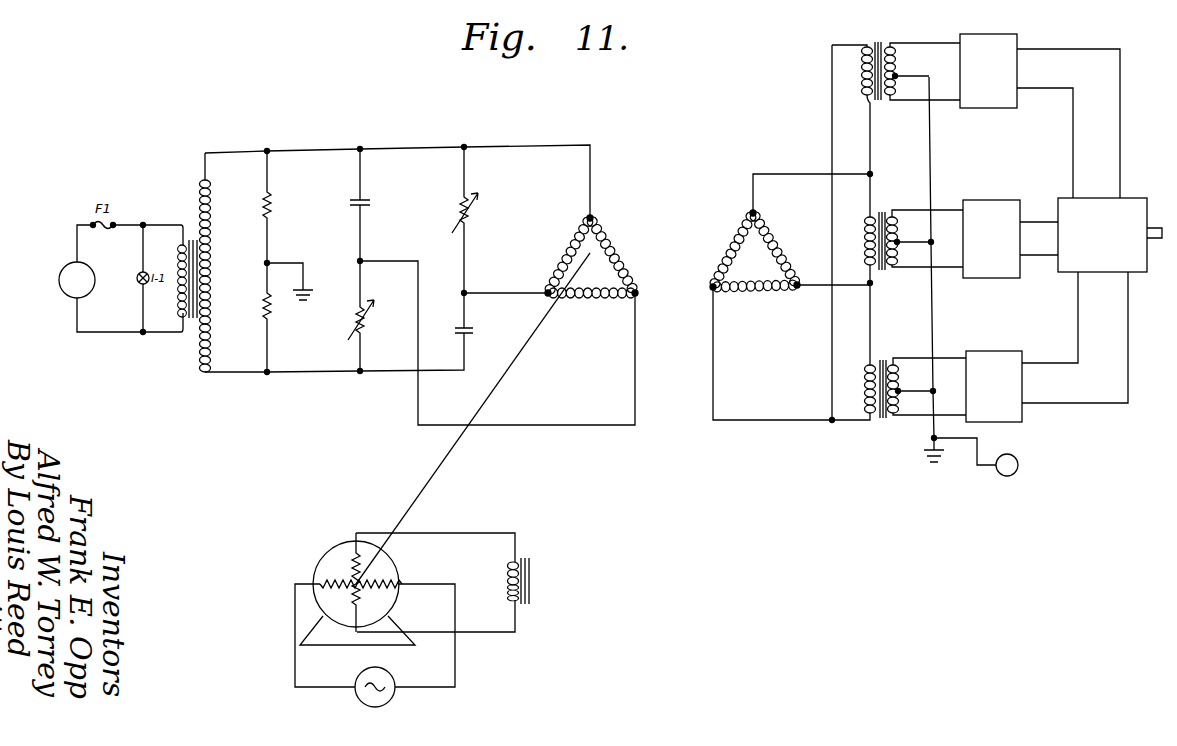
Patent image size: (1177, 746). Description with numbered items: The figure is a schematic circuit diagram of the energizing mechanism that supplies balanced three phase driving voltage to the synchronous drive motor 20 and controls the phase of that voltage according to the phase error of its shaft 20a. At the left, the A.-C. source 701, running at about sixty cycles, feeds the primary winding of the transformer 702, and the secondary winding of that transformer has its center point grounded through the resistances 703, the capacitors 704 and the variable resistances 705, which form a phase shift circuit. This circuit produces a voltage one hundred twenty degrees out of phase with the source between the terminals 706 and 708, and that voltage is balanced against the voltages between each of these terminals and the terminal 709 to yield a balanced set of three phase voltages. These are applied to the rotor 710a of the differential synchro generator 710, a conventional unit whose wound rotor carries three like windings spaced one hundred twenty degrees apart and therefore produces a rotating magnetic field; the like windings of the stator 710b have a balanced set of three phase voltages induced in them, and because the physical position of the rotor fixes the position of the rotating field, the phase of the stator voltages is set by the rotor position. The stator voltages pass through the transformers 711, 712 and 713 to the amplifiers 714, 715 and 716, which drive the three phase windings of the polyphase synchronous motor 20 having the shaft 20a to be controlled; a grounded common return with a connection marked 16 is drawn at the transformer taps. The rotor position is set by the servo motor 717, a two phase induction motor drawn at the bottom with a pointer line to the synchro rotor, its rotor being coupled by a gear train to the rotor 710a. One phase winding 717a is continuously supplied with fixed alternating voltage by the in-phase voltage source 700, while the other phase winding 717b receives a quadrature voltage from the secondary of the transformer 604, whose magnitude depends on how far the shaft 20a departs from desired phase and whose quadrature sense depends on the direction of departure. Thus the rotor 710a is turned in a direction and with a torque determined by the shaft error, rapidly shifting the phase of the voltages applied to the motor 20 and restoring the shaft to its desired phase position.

The A.-C. source 701 is at (80, 278).
The transformer 702 is at (210, 400).
The resistances 703 is at (275, 261).
The capacitors 704 is at (418, 243).
The variable resistances 705 is at (418, 259).
The terminal 706 is at (362, 261).
The terminal 708 is at (464, 292).
The terminal 709 is at (464, 147).
The differential synchro generator 710 is at (673, 258).
The rotor 710a is at (592, 260).
The stator 710b is at (754, 256).
The transformer 711 is at (896, 117).
The transformer 712 is at (914, 276).
The transformer 713 is at (916, 390).
The amplifier 714 is at (1040, 116).
The amplifier 715 is at (1010, 249).
The amplifier 716 is at (1047, 356).
The synchronous drive motor 20 is at (1115, 254).
The shaft 20a is at (1160, 222).
The connection to element 16 is at (976, 457).
The servo motor 717 is at (398, 597).
The phase winding 717a is at (384, 575).
The phase winding 717b is at (341, 552).
The transformer 604 is at (527, 594).
The in-phase voltage source 700 is at (362, 707).